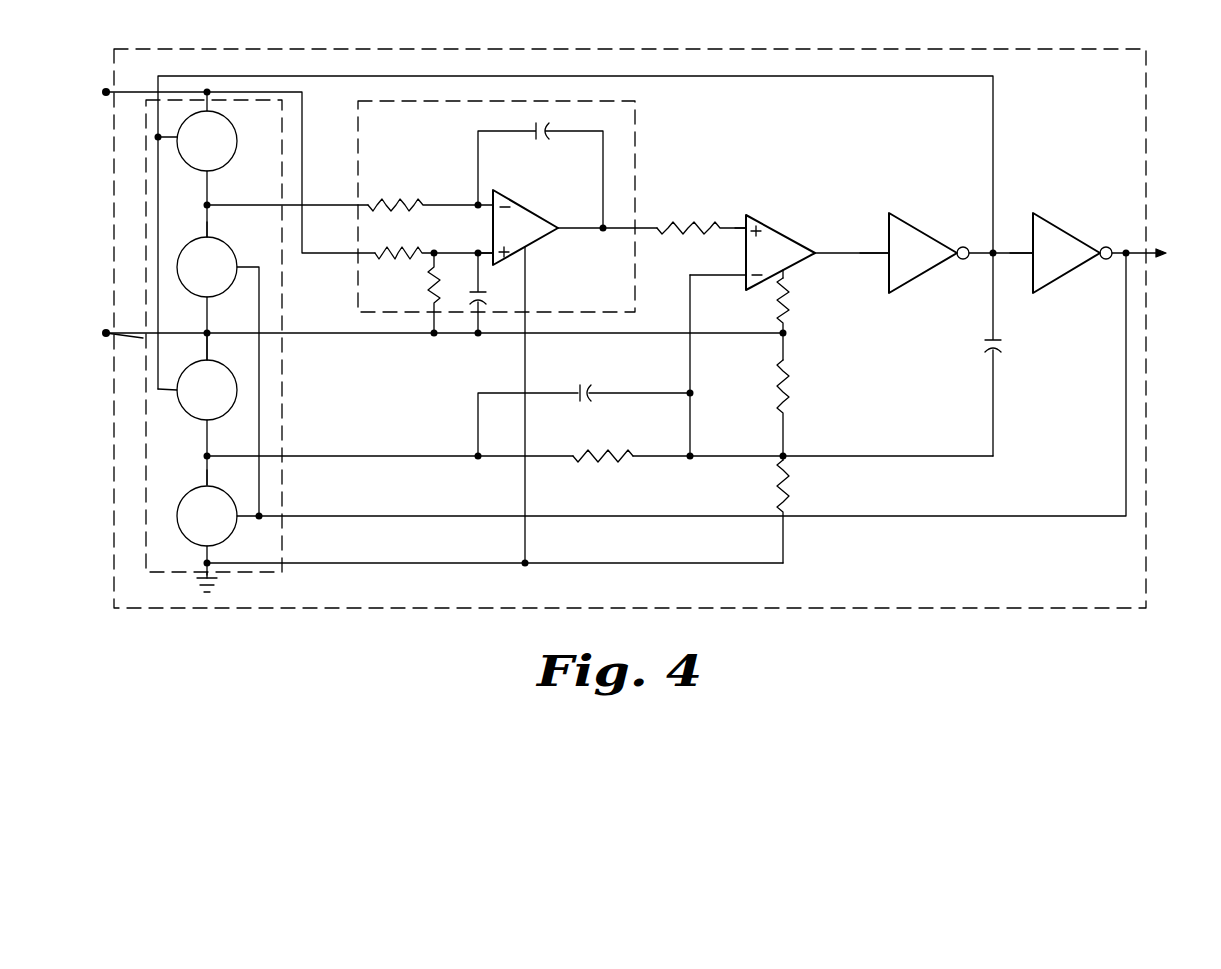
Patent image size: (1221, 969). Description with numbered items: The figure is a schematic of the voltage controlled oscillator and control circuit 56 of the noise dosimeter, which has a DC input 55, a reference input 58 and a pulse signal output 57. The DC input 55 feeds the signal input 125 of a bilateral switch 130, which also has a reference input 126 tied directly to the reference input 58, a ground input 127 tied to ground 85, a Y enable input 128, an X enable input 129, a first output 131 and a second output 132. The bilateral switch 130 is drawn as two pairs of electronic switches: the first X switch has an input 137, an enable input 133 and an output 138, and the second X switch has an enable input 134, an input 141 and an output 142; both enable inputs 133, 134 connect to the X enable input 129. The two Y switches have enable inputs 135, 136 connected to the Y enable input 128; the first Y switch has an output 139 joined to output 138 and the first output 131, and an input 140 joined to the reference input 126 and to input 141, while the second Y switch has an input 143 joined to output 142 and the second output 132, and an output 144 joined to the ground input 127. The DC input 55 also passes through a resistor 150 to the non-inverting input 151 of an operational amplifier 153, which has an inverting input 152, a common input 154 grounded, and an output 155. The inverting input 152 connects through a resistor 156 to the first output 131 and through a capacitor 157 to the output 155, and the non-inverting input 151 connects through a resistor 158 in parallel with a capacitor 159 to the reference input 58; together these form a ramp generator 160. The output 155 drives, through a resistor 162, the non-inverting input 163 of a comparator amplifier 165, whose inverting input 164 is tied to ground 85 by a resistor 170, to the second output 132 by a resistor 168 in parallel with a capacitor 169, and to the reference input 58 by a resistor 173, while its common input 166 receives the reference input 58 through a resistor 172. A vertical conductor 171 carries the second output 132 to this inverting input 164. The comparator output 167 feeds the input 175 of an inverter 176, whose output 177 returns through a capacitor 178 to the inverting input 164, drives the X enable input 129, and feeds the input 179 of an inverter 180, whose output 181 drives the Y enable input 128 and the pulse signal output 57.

The voltage controlled oscillator and control circuit 56 is at (667, 48).
The DC input 55 is at (104, 93).
The reference input 58 is at (104, 336).
The pulse signal output 57 is at (1150, 252).
The X enable input 129 is at (158, 92).
The signal input 125 is at (212, 97).
The bilateral switch 130 is at (146, 220).
The input of switch X1 137 is at (220, 113).
The enable input of switch X1 133 is at (178, 146).
The output of switch X1 138 is at (221, 168).
The first output 131 is at (282, 205).
The output of switch Y1 139 is at (214, 240).
The enable input of switch Y1 135 is at (250, 240).
The input of switch Y1 140 is at (210, 298).
The reference input 126 is at (143, 338).
The enable input of switch X2 134 is at (178, 378).
The input of switch X2 141 is at (209, 362).
The output of switch X2 142 is at (198, 421).
The second output 132 is at (283, 456).
The input of switch Y2 143 is at (200, 486).
The enable input of switch Y2 136 is at (245, 486).
The Y enable input 128 is at (283, 516).
The output of switch Y2 144 is at (200, 546).
The ground input 127 is at (200, 578).
The ground 85 is at (212, 578).
The ramp generator 160 is at (636, 125).
The resistor 156 is at (405, 200).
The resistor 150 is at (405, 238).
The resistor 158 is at (430, 291).
The capacitor 159 is at (500, 292).
The inverting input 152 is at (485, 203).
The non-inverting input 151 is at (490, 250).
The capacitor 157 is at (535, 131).
The operational amplifier 153 is at (523, 212).
The output 155 is at (598, 228).
The common input 154 is at (532, 258).
The resistor 162 is at (680, 222).
The non-inverting input 163 is at (748, 224).
The inverting input 164 is at (745, 274).
The comparator amplifier 165 is at (783, 232).
The output 167 is at (812, 252).
The common input 166 is at (785, 275).
The resistor 172 is at (795, 310).
The resistor 173 is at (800, 392).
The resistor 170 is at (798, 490).
The feedback conductor 171 is at (692, 373).
The capacitor 169 is at (578, 386).
The resistor 168 is at (612, 452).
The input of inverter 175 is at (888, 252).
The inverter 176 is at (915, 236).
The output of inverter 177 is at (960, 260).
The input of inverter 179 is at (1032, 250).
The inverter 180 is at (1060, 238).
The output of inverter 181 is at (1103, 262).
The capacitor 178 is at (1002, 340).